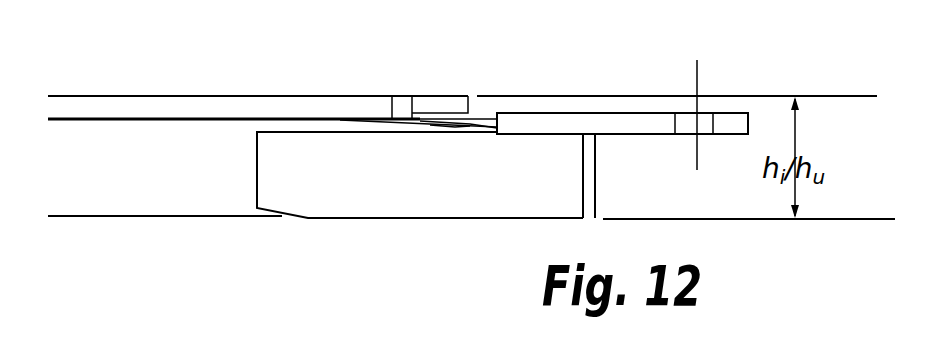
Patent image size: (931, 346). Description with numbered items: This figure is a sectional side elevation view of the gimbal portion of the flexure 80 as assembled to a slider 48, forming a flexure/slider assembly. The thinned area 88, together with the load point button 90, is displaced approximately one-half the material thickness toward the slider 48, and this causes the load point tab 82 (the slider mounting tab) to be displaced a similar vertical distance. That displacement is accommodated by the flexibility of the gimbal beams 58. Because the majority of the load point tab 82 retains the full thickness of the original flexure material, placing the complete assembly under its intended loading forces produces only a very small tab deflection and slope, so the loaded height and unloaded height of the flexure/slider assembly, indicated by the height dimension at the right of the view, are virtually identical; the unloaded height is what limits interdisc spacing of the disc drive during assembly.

The flexure 80 is at (182, 94).
The slider 48 is at (341, 160).
The thinned area 88 is at (443, 104).
The load point button 90 is at (447, 127).
The gimbal beams 58 is at (485, 118).
The load point tab 82 is at (588, 122).